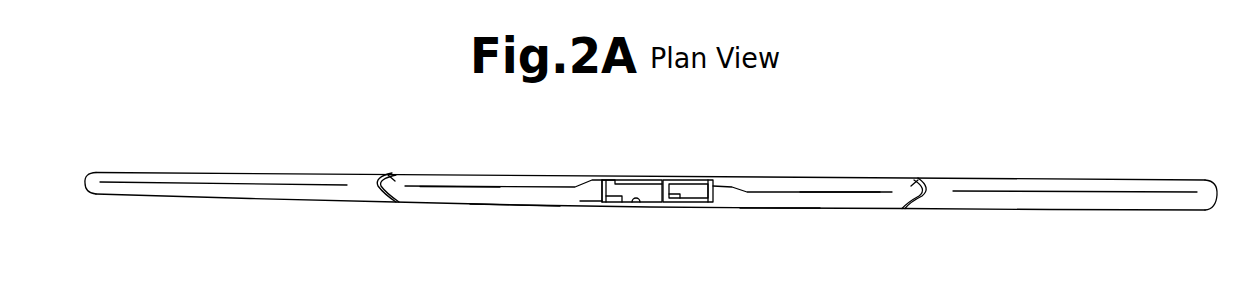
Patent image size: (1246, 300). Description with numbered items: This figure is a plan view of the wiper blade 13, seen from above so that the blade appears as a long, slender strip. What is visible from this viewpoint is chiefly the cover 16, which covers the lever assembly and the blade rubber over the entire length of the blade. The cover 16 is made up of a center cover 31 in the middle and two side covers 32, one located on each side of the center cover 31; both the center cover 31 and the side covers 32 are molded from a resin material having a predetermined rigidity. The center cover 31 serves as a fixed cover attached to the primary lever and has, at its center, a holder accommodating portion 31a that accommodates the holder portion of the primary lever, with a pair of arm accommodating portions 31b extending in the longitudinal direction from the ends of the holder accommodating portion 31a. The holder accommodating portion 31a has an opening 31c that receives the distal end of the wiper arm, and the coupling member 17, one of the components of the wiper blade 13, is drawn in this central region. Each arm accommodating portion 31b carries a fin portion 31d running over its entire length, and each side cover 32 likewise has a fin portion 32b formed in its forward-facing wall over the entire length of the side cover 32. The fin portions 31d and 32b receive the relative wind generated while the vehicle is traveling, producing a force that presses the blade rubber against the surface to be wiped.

The wiper blade 13 is at (993, 132).
The cover 16 is at (938, 178).
The coupling member 17 is at (683, 203).
The center cover 31 is at (768, 177).
The holder accommodating portion 31a is at (607, 204).
The arm accommodating portion 31b is at (512, 205).
The opening 31c is at (637, 202).
The fin portion 31d is at (455, 192).
The side cover 32 is at (296, 173).
The fin portion 32b is at (263, 198).